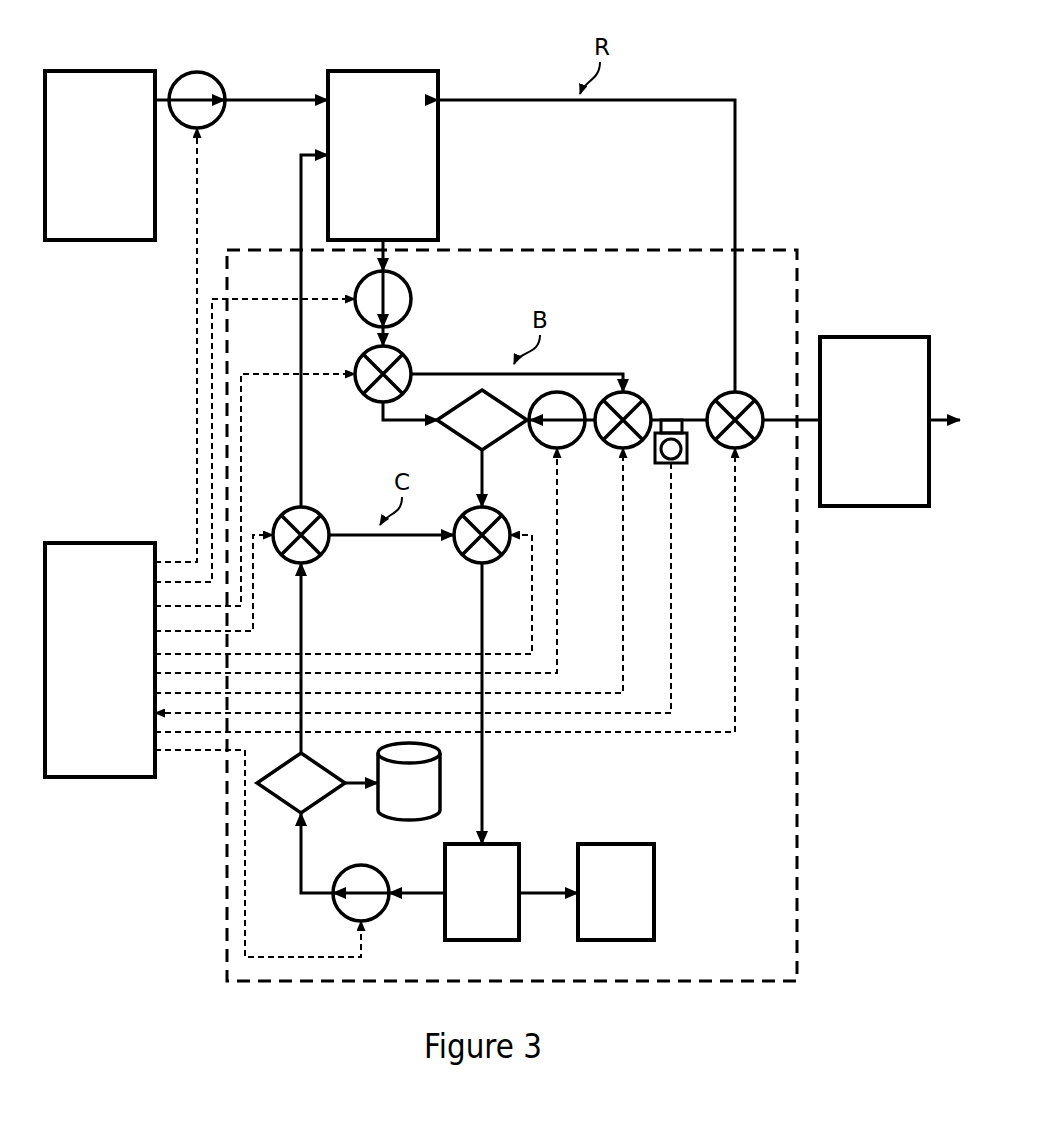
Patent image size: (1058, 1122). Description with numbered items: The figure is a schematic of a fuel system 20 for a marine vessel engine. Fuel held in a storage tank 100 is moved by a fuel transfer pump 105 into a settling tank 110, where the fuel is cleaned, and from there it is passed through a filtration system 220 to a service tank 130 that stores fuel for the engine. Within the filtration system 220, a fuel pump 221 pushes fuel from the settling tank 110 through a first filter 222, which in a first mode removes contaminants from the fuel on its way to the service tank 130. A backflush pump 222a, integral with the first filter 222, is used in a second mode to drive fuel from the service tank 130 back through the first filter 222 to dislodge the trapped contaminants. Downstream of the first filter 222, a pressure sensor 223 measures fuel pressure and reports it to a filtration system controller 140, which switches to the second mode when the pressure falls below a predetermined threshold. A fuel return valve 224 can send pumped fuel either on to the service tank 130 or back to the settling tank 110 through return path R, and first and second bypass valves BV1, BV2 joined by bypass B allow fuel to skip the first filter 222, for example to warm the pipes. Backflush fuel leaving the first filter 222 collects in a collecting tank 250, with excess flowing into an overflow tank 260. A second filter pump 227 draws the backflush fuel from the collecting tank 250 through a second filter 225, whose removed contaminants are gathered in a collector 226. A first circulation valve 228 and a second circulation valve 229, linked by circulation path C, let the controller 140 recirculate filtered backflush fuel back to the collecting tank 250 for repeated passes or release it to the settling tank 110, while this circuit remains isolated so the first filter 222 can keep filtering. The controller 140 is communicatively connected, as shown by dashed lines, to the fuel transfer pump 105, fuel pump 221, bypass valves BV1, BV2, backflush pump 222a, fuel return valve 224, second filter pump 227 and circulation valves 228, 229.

The fuel system 20 is at (752, 66).
The storage tank 100 is at (100, 155).
The fuel transfer pump 105 is at (203, 70).
The settling tank 110 is at (383, 155).
The service tank 130 is at (890, 421).
The filtration system controller 140 is at (390, 542).
The filtration system 220 is at (556, 245).
The fuel pump 221 is at (421, 300).
The first filter 222 is at (482, 420).
The backflush pump 222a is at (575, 452).
The pressure sensor 223 is at (693, 448).
The fuel return valve 224 is at (751, 452).
The second filter 225 is at (317, 783).
The collector 226 is at (409, 781).
The second filter pump 227 is at (386, 920).
The first circulation valve 228 is at (459, 566).
The second circulation valve 229 is at (326, 566).
The collecting tank 250 is at (511, 892).
The overflow tank 260 is at (616, 892).
The first bypass valve BV1 is at (362, 406).
The second bypass valve BV2 is at (641, 389).